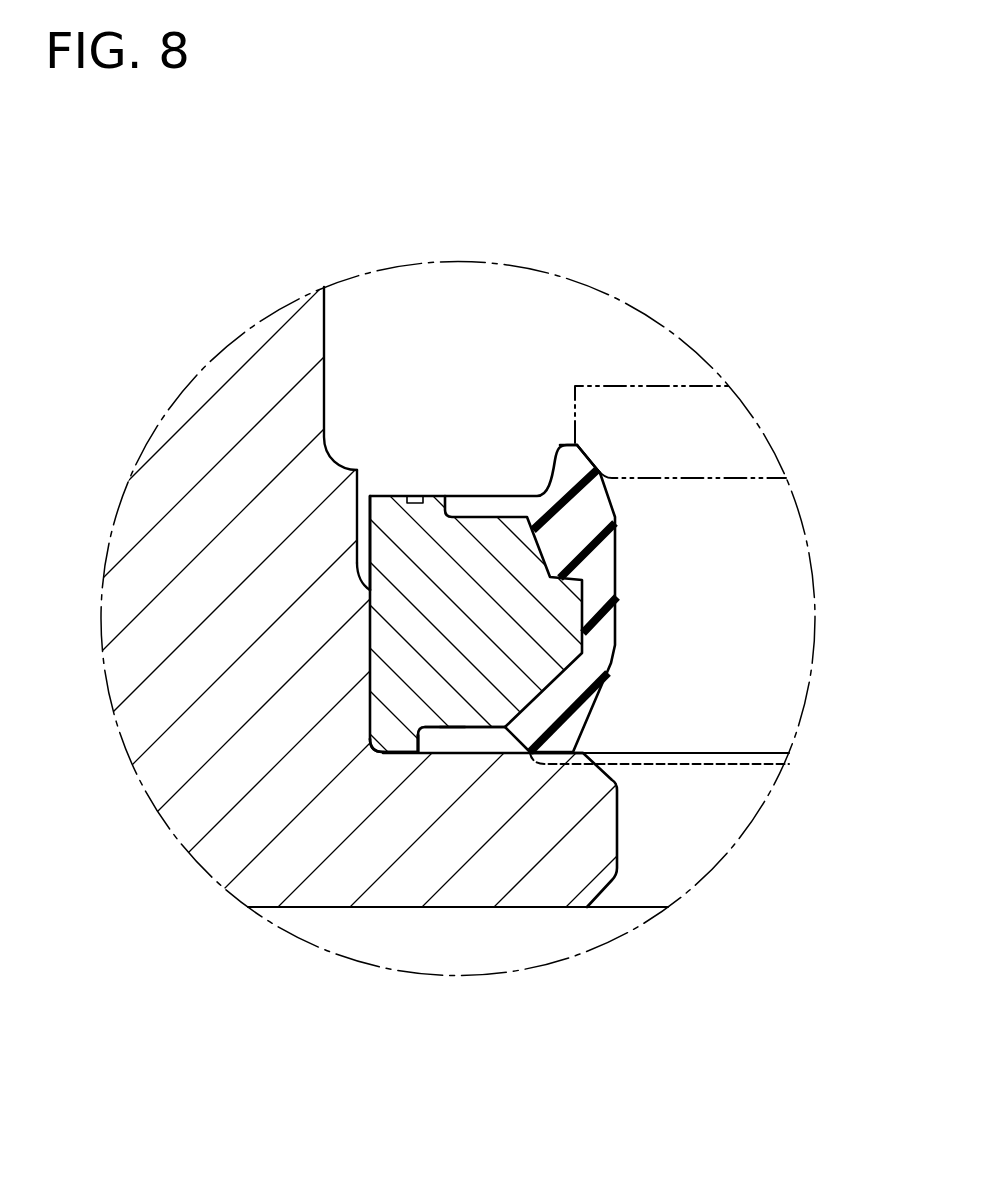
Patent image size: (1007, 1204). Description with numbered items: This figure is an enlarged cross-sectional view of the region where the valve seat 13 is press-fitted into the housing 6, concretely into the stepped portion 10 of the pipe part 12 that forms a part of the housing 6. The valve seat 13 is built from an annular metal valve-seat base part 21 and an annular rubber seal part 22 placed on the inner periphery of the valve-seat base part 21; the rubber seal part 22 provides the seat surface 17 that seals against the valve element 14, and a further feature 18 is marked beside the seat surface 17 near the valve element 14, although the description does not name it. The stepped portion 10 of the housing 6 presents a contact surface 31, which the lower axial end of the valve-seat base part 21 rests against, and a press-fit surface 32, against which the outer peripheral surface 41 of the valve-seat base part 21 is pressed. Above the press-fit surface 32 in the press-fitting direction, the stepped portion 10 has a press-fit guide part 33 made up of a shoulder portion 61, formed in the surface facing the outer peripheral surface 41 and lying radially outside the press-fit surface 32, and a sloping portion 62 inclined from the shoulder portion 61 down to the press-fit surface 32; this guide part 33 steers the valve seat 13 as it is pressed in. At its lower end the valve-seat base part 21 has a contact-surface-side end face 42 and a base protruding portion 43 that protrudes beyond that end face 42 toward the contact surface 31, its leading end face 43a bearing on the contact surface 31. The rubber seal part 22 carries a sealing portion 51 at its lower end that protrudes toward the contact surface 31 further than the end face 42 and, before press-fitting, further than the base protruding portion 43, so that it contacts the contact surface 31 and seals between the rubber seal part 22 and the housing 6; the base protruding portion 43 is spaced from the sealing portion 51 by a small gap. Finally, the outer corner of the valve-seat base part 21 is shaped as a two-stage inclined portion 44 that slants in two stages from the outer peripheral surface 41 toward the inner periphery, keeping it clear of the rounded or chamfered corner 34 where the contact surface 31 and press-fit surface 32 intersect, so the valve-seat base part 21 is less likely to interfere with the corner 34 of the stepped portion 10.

The housing 6 is at (503, 651).
The stepped portion 10 is at (503, 651).
The pipe part 12 is at (232, 405).
The valve seat 13 is at (428, 703).
The valve element 14 is at (625, 386).
The seat surface 17 is at (597, 470).
The end face 18 is at (597, 460).
The valve-seat base part 21 is at (397, 603).
The rubber seal part 22 is at (600, 582).
The contact surface 31 is at (500, 753).
The press-fit surface 32 is at (373, 660).
The press-fit guide part 33 is at (227, 476).
The corner 34 is at (414, 750).
The outer peripheral surface 41 is at (357, 527).
The contact-surface-side end face 42 is at (491, 728).
The base protruding portion 43 is at (510, 752).
The leading end face 43a is at (417, 752).
The two-stage inclined portion 44 is at (413, 745).
The sealing portion 51 is at (553, 753).
The shoulder portion 61 is at (360, 478).
The sloping portion 62 is at (367, 593).